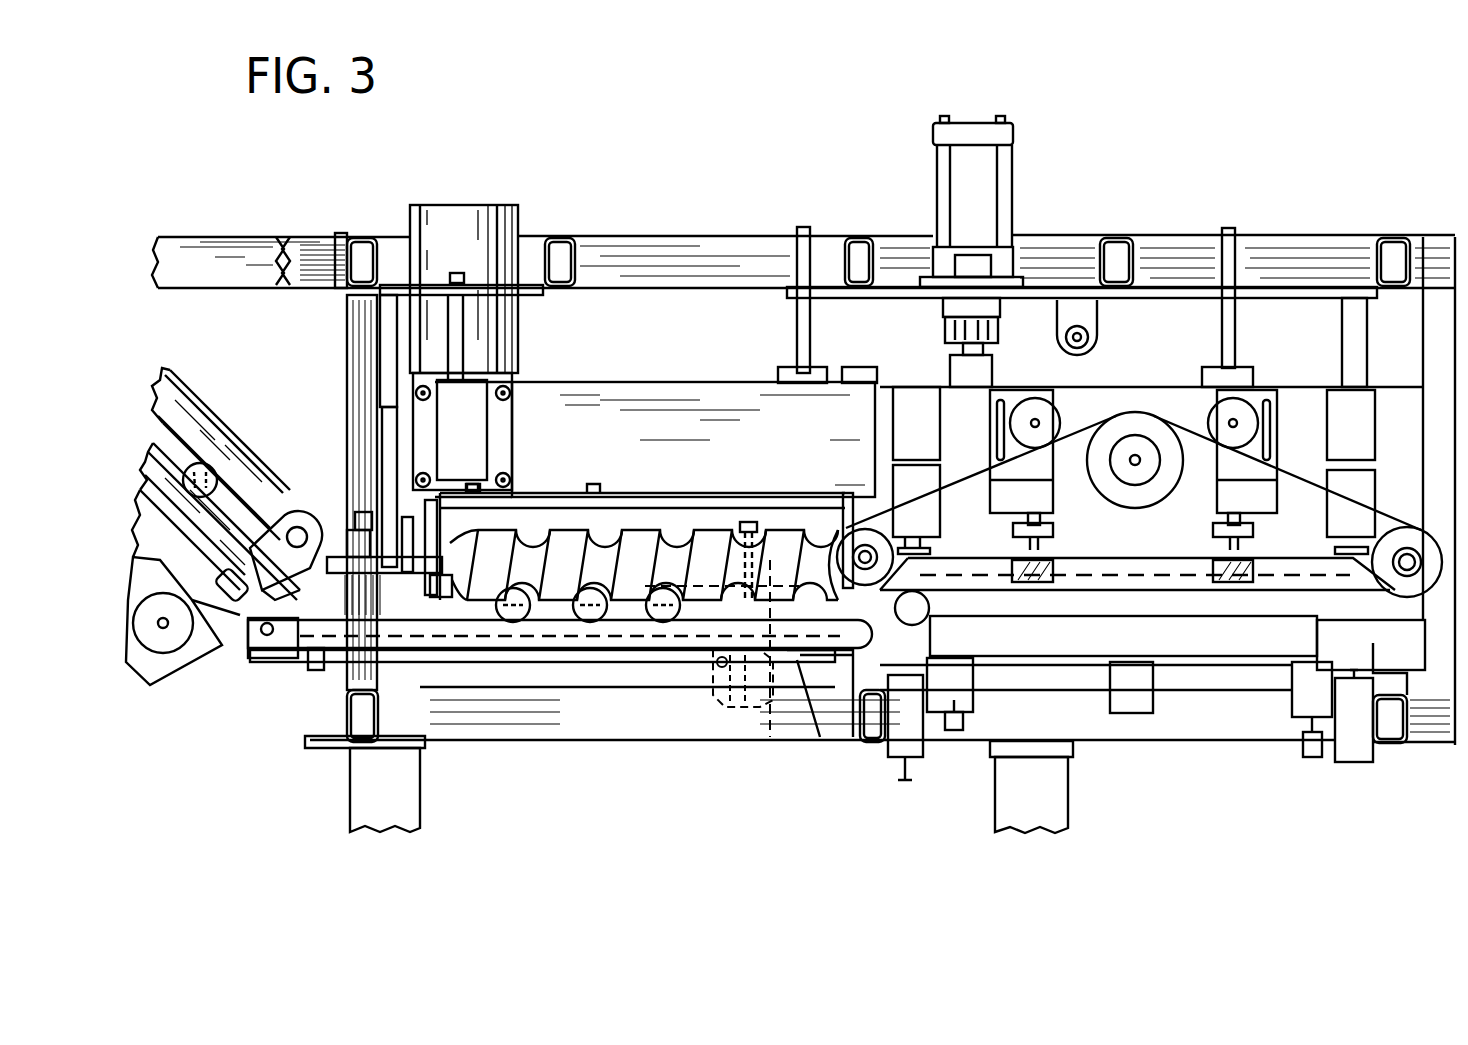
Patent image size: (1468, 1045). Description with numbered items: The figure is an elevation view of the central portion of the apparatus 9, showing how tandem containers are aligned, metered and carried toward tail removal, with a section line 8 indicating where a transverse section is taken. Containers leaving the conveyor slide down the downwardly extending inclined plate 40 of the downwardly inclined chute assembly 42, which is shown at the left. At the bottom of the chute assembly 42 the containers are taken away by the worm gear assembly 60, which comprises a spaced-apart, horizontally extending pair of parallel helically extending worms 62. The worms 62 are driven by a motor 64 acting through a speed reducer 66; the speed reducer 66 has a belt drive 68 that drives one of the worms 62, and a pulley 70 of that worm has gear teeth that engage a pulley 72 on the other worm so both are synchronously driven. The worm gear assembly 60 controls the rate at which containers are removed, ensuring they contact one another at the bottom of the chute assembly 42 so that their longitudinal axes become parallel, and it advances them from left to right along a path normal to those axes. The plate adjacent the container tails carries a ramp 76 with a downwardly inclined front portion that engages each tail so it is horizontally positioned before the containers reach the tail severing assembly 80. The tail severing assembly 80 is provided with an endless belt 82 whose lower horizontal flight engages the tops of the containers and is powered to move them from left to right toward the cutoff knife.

The section line 8- 8 is at (323, 610).
The dispensing apparatus 9 is at (803, 474).
The downwardly extending inclined plate 40 is at (205, 468).
The downwardly inclined chute assembly 42 is at (192, 390).
The worm gear assembly 60 is at (705, 575).
The helically extending worms 62 is at (632, 548).
The motor 64 is at (478, 215).
The speed reducer 66 is at (500, 443).
The belt drive 68 is at (393, 483).
The pulley 70 is at (383, 540).
The pulley 72 is at (528, 630).
The ramp 76 is at (632, 645).
The tail severing assembly 80 is at (1118, 368).
The endless belt 82 is at (1283, 480).